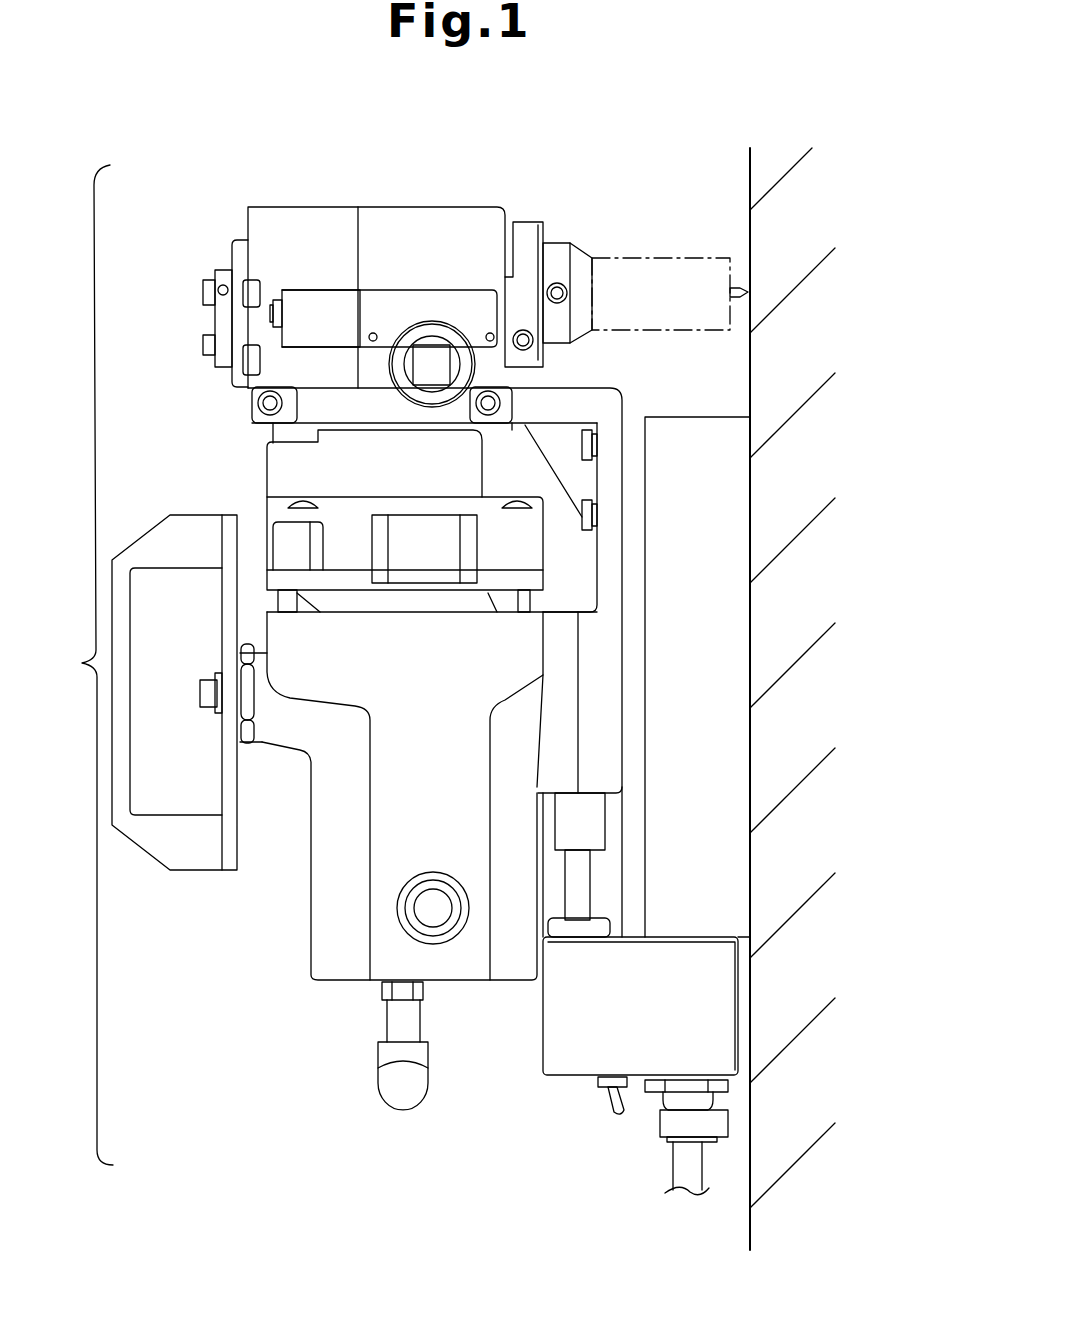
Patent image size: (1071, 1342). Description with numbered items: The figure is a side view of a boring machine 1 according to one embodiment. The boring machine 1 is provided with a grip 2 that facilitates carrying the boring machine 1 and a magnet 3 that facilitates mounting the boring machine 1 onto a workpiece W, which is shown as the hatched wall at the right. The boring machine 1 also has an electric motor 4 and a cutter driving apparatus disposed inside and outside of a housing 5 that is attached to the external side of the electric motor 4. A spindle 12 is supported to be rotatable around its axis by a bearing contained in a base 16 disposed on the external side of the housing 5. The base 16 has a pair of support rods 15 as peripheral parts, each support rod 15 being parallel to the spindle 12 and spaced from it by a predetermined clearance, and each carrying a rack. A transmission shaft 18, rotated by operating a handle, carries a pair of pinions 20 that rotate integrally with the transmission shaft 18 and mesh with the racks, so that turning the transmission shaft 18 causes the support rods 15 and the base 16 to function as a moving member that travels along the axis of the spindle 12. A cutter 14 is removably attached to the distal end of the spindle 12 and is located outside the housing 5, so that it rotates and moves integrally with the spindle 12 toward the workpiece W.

The boring machine 1 is at (84, 665).
The grip 2 is at (201, 865).
The magnet 3 is at (738, 618).
The electric motor 4 is at (278, 477).
The housing 5 is at (280, 207).
The spindle 12 is at (557, 247).
The cutter 14 is at (607, 330).
The support rod 15 is at (275, 312).
The base 16 is at (528, 226).
The transmission shaft 18 is at (427, 357).
The pinion 20 is at (417, 400).
The workpiece W is at (748, 183).